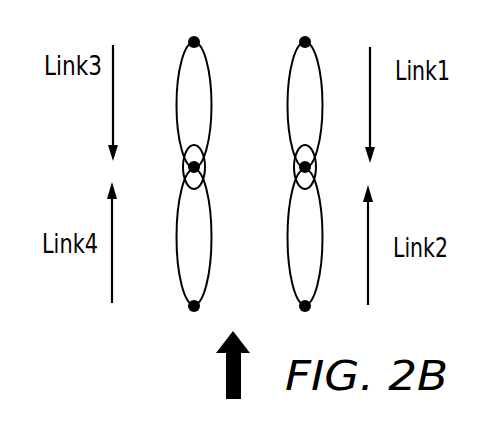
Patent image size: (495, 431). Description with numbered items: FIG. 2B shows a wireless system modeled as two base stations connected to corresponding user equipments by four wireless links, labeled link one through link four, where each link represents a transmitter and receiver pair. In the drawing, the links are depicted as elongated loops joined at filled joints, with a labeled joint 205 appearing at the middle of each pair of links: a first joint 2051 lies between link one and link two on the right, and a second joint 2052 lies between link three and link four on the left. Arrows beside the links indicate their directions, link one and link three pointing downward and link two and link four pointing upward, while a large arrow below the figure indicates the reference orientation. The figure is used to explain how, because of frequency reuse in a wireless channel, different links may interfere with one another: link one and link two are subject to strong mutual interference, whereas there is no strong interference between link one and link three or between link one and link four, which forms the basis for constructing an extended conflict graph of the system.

The joint 205 is at (249, 168).
The joint (first) 2051 is at (293, 167).
The joint (second) 2052 is at (203, 168).